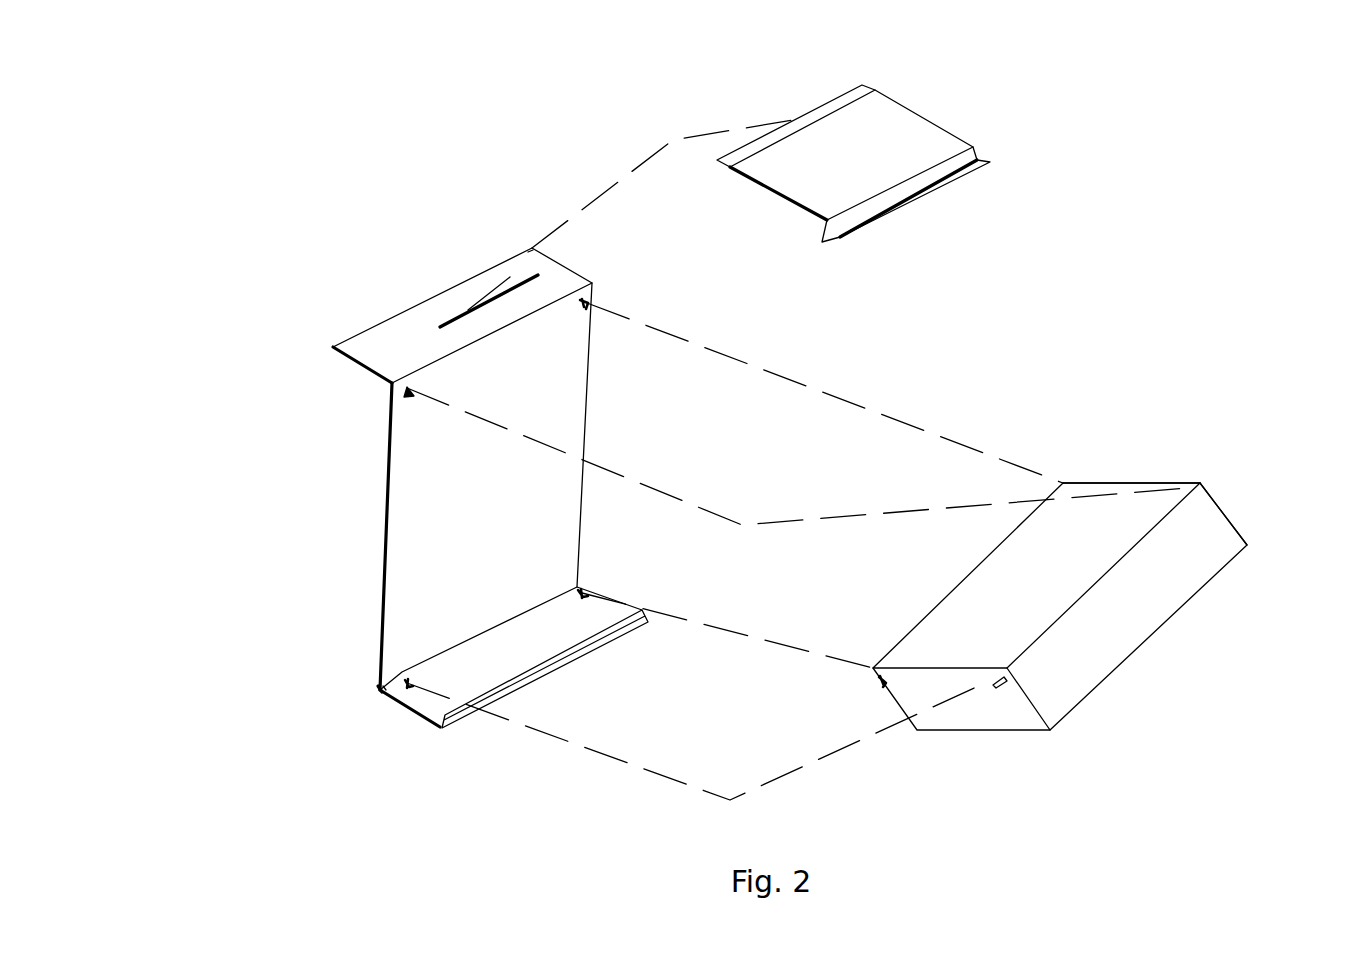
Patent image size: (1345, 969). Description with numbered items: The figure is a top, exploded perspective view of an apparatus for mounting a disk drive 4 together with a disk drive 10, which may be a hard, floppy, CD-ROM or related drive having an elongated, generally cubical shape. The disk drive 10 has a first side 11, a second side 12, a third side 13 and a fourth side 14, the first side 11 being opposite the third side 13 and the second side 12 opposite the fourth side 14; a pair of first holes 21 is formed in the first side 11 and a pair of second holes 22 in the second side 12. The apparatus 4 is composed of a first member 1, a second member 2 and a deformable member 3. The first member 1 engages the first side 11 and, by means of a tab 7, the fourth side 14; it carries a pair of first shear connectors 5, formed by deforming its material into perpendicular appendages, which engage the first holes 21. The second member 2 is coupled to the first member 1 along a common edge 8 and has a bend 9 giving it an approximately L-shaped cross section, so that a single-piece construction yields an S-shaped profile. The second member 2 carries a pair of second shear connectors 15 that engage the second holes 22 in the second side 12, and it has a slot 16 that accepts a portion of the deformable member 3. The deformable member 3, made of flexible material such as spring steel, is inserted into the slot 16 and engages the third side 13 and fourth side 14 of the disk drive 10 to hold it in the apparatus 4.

The first member 1 is at (410, 710).
The second member 2 is at (382, 520).
The deformable member 3 is at (858, 152).
The apparatus for mounting a disk drive 4 is at (530, 160).
The first shear connector 5 is at (384, 688).
The tab 7 is at (440, 727).
The common edge 8 is at (380, 688).
The bend 9 is at (392, 385).
The disk drive 10 is at (1140, 688).
The first side 11 is at (953, 707).
The second side 12 is at (1042, 562).
The third side 13 is at (1213, 487).
The fourth side 14 is at (1168, 623).
The second shear connector 15 is at (587, 303).
The slot 16 is at (449, 318).
The first hole 21 is at (1007, 683).
The second hole 22 is at (1187, 487).